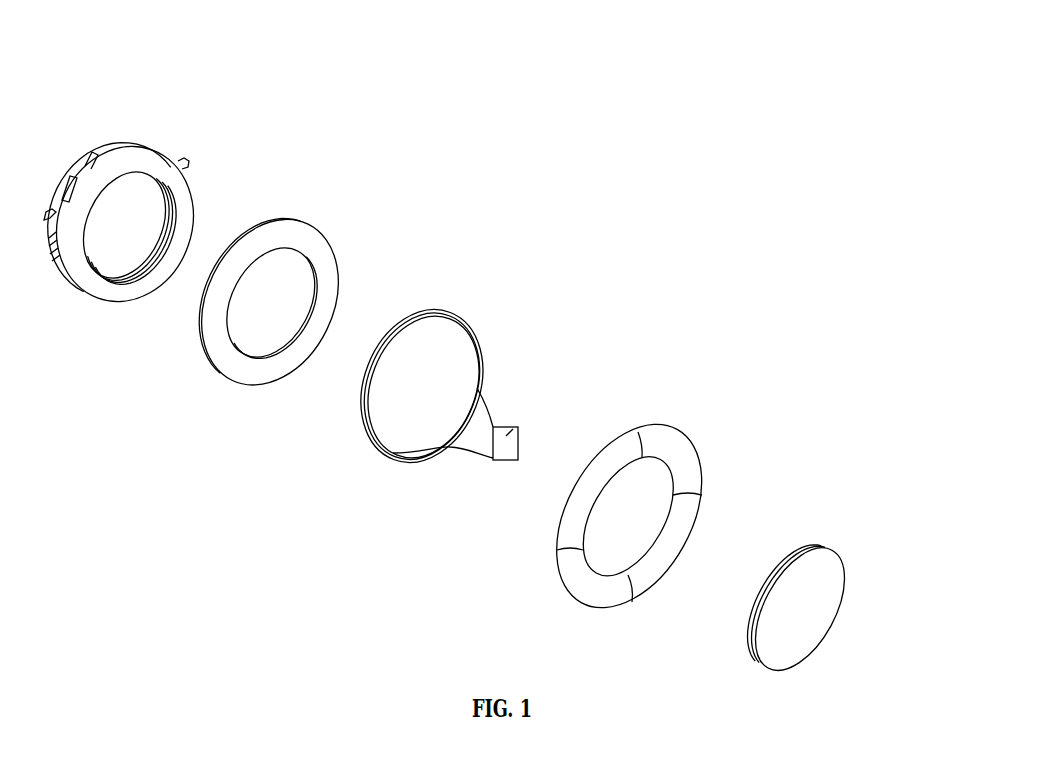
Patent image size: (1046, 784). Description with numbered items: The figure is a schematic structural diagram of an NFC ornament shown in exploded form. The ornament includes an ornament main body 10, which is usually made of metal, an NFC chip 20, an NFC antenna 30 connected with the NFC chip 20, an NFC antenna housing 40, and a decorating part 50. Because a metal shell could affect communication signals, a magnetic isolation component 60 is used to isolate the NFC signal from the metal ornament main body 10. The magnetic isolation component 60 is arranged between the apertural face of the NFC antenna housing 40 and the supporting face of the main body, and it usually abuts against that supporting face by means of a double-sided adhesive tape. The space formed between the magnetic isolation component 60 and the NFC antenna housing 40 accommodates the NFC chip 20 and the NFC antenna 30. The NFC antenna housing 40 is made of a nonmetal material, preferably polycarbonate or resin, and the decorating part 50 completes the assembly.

The ornament main body 10 is at (123, 138).
The magnetic isolation component 60 is at (312, 223).
The NFC antenna 30 is at (432, 308).
The NFC chip 20 is at (517, 428).
The NFC antenna housing 40 is at (677, 427).
The decorating part 50 is at (828, 543).